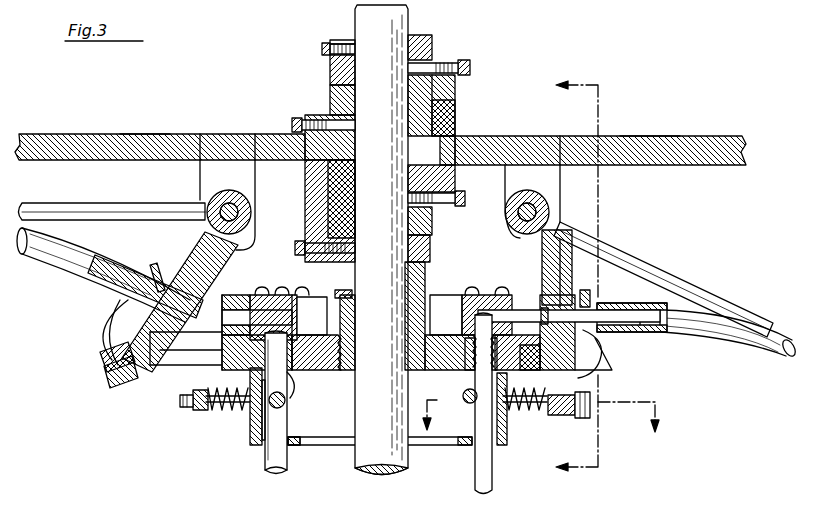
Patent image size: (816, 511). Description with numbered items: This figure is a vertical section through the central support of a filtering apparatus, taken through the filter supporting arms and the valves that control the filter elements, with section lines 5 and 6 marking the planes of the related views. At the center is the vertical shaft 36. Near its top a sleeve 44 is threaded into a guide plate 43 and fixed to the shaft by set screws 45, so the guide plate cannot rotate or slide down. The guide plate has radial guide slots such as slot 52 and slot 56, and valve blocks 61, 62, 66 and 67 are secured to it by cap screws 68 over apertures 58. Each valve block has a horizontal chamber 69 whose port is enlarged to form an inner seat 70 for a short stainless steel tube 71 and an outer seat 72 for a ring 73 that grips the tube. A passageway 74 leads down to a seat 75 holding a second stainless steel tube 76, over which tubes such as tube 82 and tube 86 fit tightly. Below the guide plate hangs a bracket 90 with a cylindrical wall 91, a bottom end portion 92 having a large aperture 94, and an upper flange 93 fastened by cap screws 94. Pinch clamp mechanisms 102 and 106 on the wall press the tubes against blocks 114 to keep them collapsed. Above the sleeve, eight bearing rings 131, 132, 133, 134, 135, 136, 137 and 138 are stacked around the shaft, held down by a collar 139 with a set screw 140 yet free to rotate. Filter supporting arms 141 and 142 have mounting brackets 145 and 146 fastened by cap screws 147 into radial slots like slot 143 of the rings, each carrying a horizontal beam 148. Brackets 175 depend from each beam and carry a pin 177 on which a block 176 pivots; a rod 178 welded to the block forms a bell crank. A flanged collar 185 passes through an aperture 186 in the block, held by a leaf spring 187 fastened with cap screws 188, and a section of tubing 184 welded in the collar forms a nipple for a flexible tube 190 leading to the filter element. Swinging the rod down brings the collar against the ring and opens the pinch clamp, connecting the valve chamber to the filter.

The section line 5- 5 is at (587, 277).
The section line 6- 6 is at (541, 417).
The vertical shaft 36 is at (358, 466).
The guide plate 43 is at (292, 382).
The sleeve 44 is at (426, 290).
The set screws 45 is at (338, 292).
The guide slot 52 is at (600, 356).
The guide slot 56 is at (166, 368).
The aperture 58 is at (463, 396).
The valve block 61 is at (440, 298).
The valve block 62 is at (488, 308).
The valve block 66 is at (222, 352).
The valve block 67 is at (300, 296).
The cap screws 68 is at (262, 293).
The chamber 69 is at (496, 296).
The inner seat 70 is at (262, 294).
The stainless steel tube 71 is at (223, 298).
The outer seat 72 is at (246, 283).
The ring 73 is at (226, 323).
The passageway 74 is at (300, 370).
The seat 75 is at (460, 345).
The stainless steel tube 76 is at (478, 378).
The tube 82 is at (493, 475).
The tube 86 is at (265, 468).
The bracket 90 is at (250, 447).
The cylindrical wall 91 is at (252, 432).
The bottom end portion 92 is at (291, 446).
The upper flange 93 is at (200, 412).
The cap screws 94 is at (223, 411).
The pinch clamp mechanism 102 is at (522, 417).
The pinch clamp mechanism 106 is at (183, 402).
The block 114 is at (286, 412).
The bearing ring 131 is at (430, 252).
The bearing ring 132 is at (432, 228).
The bearing ring 133 is at (330, 190).
The bearing ring 134 is at (306, 175).
The bearing ring 135 is at (458, 136).
The bearing ring 136 is at (456, 108).
The bearing ring 137 is at (330, 95).
The bearing ring 138 is at (330, 70).
The collar 139 is at (330, 40).
The set screw 140 is at (324, 48).
The filter supporting arm 141 is at (128, 132).
The filter supporting arm 142 is at (628, 130).
The slot 143 is at (432, 62).
The mounting bracket 145 is at (305, 135).
The bracket 146 is at (433, 146).
The cap screws 147 is at (297, 121).
The horizontal beam 148 is at (167, 135).
The brackets 175 is at (203, 174).
The block 176 is at (180, 240).
The pin 177 is at (210, 200).
The rod 178 is at (88, 202).
The section of tubing 184 is at (125, 295).
The flanged collar 185 is at (160, 268).
The aperture 186 is at (115, 330).
The leaf spring 187 is at (114, 322).
The cap screws 188 is at (102, 358).
The flexible tube 190 is at (80, 262).